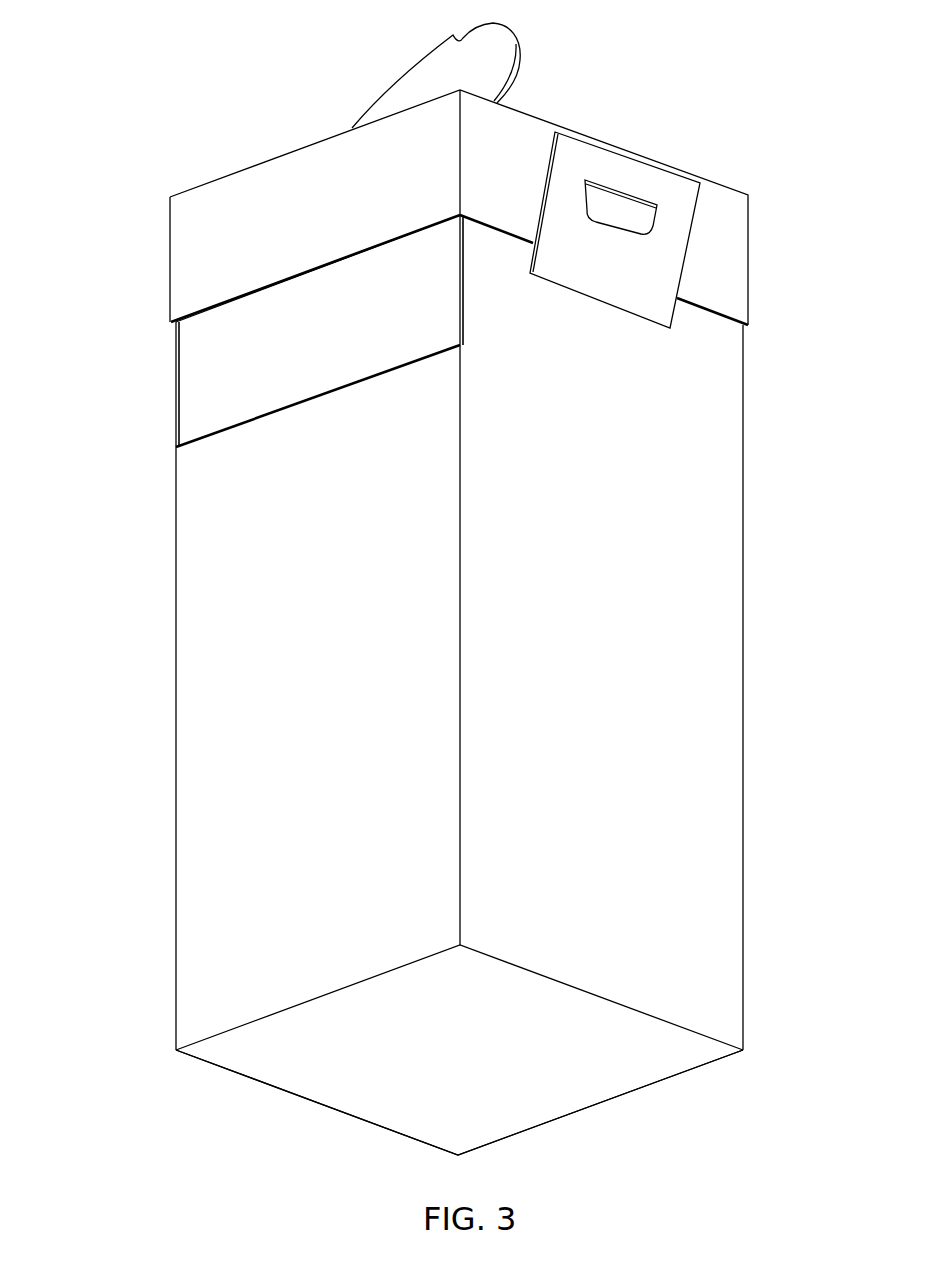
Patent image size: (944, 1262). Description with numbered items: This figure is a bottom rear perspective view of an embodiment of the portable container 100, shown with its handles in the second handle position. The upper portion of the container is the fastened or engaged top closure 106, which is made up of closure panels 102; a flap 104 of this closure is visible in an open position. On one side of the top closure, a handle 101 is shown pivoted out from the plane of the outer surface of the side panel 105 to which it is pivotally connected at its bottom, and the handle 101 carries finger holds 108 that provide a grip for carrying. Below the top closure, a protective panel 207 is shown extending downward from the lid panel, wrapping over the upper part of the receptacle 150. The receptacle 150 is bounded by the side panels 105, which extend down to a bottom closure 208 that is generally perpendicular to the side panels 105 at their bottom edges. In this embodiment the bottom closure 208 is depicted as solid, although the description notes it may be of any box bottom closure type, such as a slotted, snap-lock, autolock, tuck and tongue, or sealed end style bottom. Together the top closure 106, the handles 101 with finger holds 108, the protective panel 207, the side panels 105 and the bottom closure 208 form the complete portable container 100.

The portable container 100 is at (157, 758).
The handle 101 is at (673, 245).
The closure panels 102 is at (282, 200).
The flap 104 is at (440, 57).
The side panel 105 is at (215, 888).
The top closure 106 is at (168, 257).
The finger holds 108 is at (630, 210).
The receptacle 150 is at (178, 603).
The protective panel 207 is at (203, 375).
The bottom closure 208 is at (308, 1062).